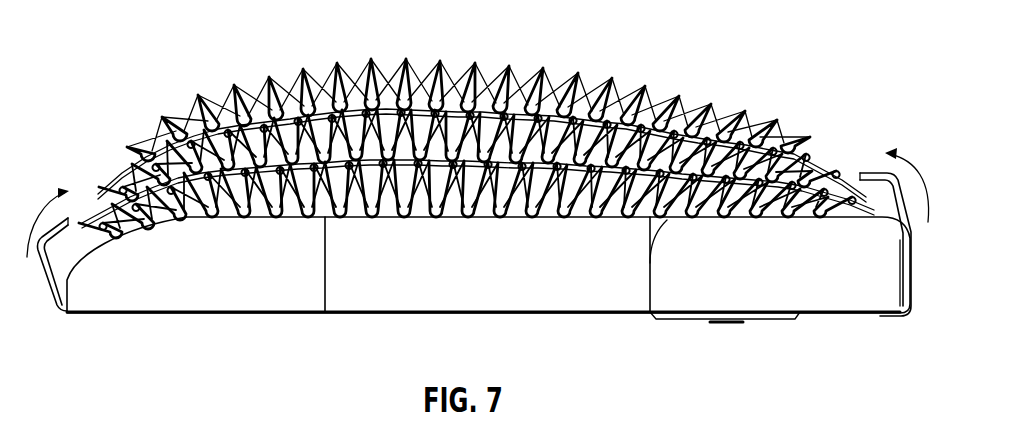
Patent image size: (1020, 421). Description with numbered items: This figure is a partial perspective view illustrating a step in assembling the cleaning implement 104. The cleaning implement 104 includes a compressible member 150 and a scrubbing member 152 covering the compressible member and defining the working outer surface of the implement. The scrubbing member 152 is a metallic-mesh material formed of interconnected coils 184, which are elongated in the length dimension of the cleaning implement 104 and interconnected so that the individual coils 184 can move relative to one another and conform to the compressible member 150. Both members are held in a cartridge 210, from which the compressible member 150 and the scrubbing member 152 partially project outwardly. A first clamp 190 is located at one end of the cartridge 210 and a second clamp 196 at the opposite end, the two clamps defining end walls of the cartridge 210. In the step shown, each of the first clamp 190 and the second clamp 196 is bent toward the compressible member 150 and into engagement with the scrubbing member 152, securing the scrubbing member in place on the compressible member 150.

The cleaning implement 104 is at (125, 43).
The compressible member 150 is at (550, 212).
The scrubbing member 152 is at (588, 72).
The coils 184 is at (360, 56).
The first clamp 190 is at (910, 293).
The second clamp 196 is at (38, 283).
The cartridge 210 is at (395, 292).